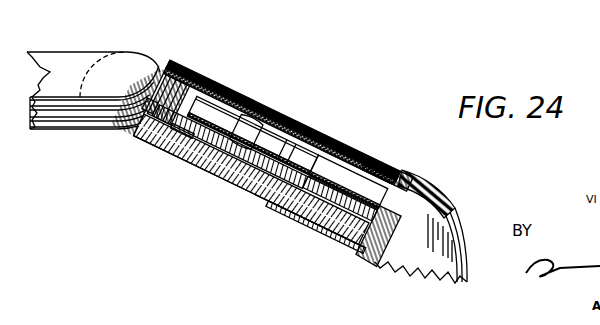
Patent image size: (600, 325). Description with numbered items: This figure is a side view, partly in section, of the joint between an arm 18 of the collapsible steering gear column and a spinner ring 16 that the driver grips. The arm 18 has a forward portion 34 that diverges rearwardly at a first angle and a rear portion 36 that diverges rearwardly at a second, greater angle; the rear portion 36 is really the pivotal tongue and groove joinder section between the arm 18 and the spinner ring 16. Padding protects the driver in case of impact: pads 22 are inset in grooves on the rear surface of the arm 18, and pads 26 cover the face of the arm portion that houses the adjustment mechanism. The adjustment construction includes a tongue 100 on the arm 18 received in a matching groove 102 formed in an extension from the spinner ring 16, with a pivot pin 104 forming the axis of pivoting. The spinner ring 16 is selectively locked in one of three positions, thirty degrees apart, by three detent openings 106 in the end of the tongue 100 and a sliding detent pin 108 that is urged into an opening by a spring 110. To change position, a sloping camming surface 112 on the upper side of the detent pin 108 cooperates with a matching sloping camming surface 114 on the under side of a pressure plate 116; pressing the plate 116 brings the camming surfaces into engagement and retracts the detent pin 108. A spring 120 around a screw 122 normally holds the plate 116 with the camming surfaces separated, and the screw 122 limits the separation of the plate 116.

The spinner ring 16 is at (122, 53).
The arm 18 is at (372, 272).
The pad 22 is at (432, 190).
The pad 26 is at (376, 168).
The forward portion 34 is at (456, 222).
The rear portion 36 is at (352, 140).
The tongue 100 is at (312, 225).
The groove 102 is at (350, 246).
The pivot pin 104 is at (337, 138).
The detent openings 106 is at (306, 150).
The detent pin 108 is at (220, 150).
The spring 110 is at (172, 142).
The camming surface 112 is at (285, 120).
The camming surface 114 is at (258, 100).
The pressure plate 116 is at (218, 80).
The spring 120 is at (162, 87).
The screw 122 is at (158, 135).